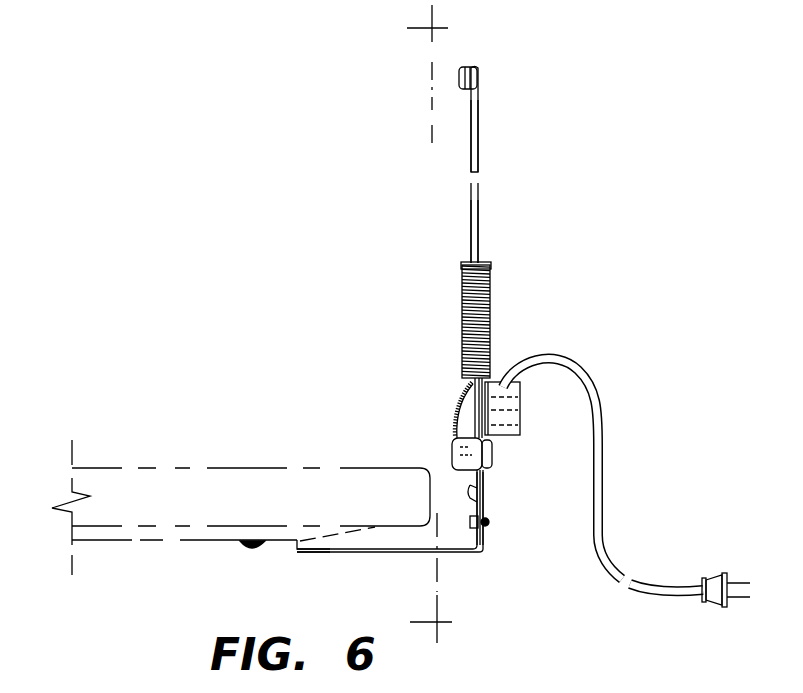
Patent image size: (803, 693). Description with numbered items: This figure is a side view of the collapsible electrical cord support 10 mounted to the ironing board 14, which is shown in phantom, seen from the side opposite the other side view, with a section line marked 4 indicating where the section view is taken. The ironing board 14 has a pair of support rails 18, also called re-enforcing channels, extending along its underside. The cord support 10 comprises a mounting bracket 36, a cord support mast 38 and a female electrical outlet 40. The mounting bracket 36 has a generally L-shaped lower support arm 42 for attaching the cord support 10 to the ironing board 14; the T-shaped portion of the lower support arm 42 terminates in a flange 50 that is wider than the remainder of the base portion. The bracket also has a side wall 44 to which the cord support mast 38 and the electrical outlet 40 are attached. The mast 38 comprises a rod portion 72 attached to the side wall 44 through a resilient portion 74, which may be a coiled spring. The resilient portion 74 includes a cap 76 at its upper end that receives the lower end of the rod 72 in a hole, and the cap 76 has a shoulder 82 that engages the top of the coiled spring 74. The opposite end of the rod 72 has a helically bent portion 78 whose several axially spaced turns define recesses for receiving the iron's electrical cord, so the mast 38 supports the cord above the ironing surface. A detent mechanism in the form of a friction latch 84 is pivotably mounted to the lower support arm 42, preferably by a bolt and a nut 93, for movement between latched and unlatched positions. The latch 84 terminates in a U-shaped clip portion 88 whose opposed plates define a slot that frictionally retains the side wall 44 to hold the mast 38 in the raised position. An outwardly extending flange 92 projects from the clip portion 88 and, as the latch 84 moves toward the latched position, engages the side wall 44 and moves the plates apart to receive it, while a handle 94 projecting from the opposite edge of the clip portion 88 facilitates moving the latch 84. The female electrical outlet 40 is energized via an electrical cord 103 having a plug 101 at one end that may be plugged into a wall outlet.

The section line 4- 4 is at (508, 622).
The collapsible electrical cord support 10 is at (388, 366).
The ironing board 14 is at (143, 498).
The support rails 18 is at (110, 533).
The mounting bracket 36 is at (392, 553).
The cord support mast 38 is at (443, 318).
The female electrical outlet 40 is at (518, 415).
The lower support arm 42 is at (318, 554).
The side wall 44 is at (462, 417).
The flange 50 is at (280, 555).
The rod portion 72 is at (480, 190).
The resilient portion 74 is at (492, 300).
The cap 76 is at (480, 262).
The helically bent portion 78 is at (480, 81).
The shoulder 82 is at (492, 263).
The friction latch 84 is at (486, 510).
The clip portion 88 is at (482, 500).
The outwardly extending flange 92 is at (488, 457).
The nut 93 is at (474, 524).
The handle 94 is at (455, 455).
The plug 101 is at (712, 575).
The electrical cord 103 is at (600, 492).